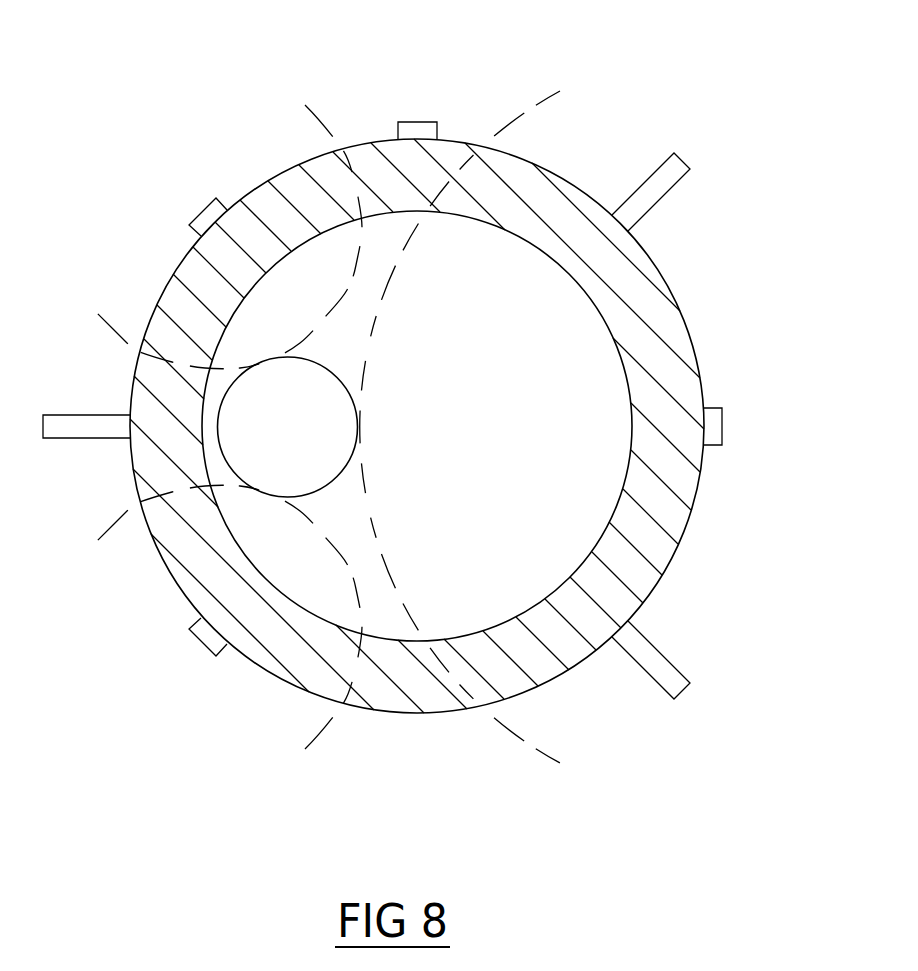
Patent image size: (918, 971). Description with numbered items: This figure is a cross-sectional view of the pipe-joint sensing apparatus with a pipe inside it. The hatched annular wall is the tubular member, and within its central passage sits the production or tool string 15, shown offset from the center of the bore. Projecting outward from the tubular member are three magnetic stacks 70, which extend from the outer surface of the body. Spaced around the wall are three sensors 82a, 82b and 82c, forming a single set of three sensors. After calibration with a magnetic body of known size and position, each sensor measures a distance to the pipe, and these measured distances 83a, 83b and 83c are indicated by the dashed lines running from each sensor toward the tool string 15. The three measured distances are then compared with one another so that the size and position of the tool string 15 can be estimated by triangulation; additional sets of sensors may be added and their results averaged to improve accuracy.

The production or tool string 15 is at (228, 389).
The magnetic stack 70 is at (72, 415).
The sensor 82a is at (205, 208).
The sensor 82b is at (722, 423).
The sensor 82c is at (207, 643).
The measured distance 83a is at (319, 121).
The measured distance 83b is at (550, 95).
The measured distance 83c is at (320, 733).